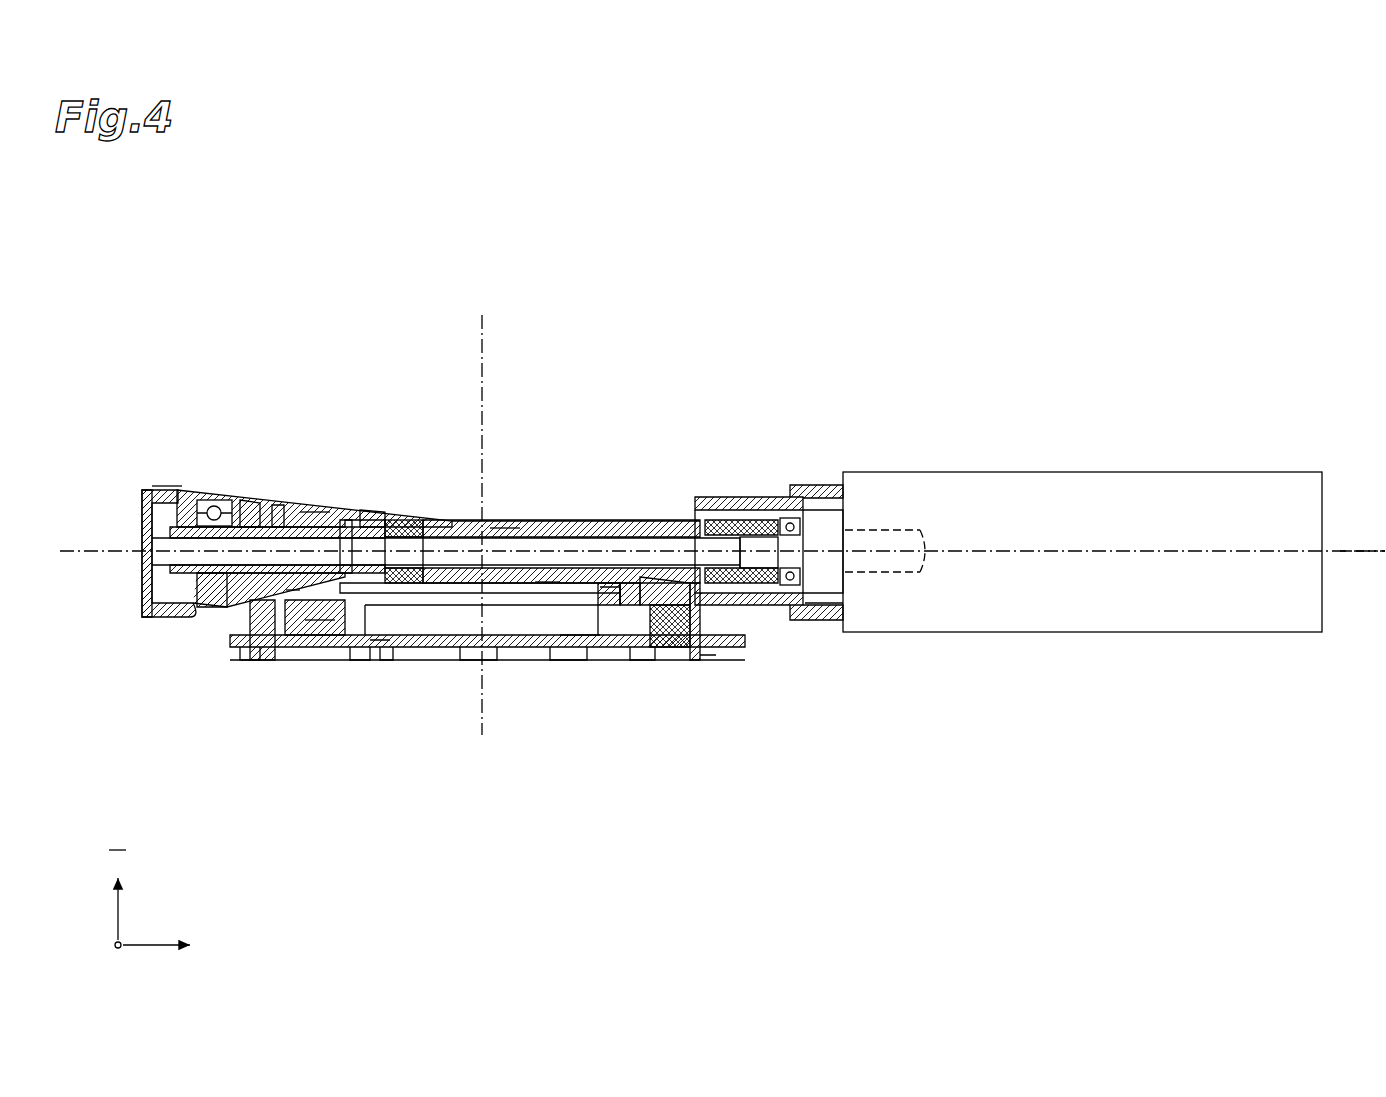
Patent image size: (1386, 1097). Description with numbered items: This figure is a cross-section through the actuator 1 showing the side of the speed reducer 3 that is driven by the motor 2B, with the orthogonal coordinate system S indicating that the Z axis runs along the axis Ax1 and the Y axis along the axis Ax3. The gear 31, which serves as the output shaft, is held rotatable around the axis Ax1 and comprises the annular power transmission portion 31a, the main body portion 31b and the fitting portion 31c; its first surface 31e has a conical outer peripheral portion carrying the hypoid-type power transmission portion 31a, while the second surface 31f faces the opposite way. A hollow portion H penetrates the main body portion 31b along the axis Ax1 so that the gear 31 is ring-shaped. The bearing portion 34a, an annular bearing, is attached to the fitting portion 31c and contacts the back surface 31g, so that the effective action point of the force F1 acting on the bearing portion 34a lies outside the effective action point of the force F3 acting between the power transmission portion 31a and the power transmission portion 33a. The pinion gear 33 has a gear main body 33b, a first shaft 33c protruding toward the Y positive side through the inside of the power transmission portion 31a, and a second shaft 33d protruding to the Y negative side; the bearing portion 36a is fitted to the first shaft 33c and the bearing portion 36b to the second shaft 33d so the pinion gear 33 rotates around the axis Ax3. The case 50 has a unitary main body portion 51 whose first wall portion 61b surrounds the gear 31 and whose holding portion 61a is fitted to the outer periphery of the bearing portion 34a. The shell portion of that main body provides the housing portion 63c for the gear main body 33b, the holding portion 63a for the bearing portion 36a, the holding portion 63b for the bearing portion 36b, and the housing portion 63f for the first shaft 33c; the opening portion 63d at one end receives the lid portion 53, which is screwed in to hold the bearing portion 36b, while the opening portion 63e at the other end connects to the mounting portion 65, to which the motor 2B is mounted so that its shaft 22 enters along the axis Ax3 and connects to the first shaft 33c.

The actuator 1 is at (222, 262).
The motor 2B is at (1237, 470).
The speed reducer 3 is at (777, 706).
The shaft 22 is at (866, 530).
The gear 31 is at (665, 560).
The power transmission portion 31a is at (345, 630).
The main body portion 31b is at (598, 655).
The fitting portion 31c is at (278, 520).
The first surface 31e is at (380, 640).
The second surface 31f is at (640, 525).
The back surface 31g is at (265, 655).
The pinion gear 33 is at (580, 520).
The power transmission portion 33a is at (322, 520).
The gear main body 33b is at (345, 520).
The first shaft 33c is at (505, 525).
The second shaft 33d is at (178, 545).
The bearing portion 34a is at (248, 595).
The bearing portion 36a is at (405, 520).
The bearing portion 36b is at (208, 505).
The case 50 is at (158, 478).
The main body portion 51 is at (705, 495).
The lid portion 53 is at (148, 525).
The holding portion 61a is at (652, 640).
The first wall portion 61b is at (728, 622).
The holding portion 63a is at (375, 520).
The holding portion 63b is at (176, 490).
The housing portion 63c is at (253, 508).
The opening portion 63d is at (150, 492).
The opening portion 63e is at (845, 625).
The housing portion 63f is at (470, 520).
The mounting portion 65 is at (797, 490).
The axis Ax1 is at (477, 513).
The axis Ax3 is at (1361, 538).
The force F1 is at (291, 597).
The force F3 is at (320, 625).
The hollow portion H is at (545, 578).
The orthogonal coordinate system S is at (138, 948).